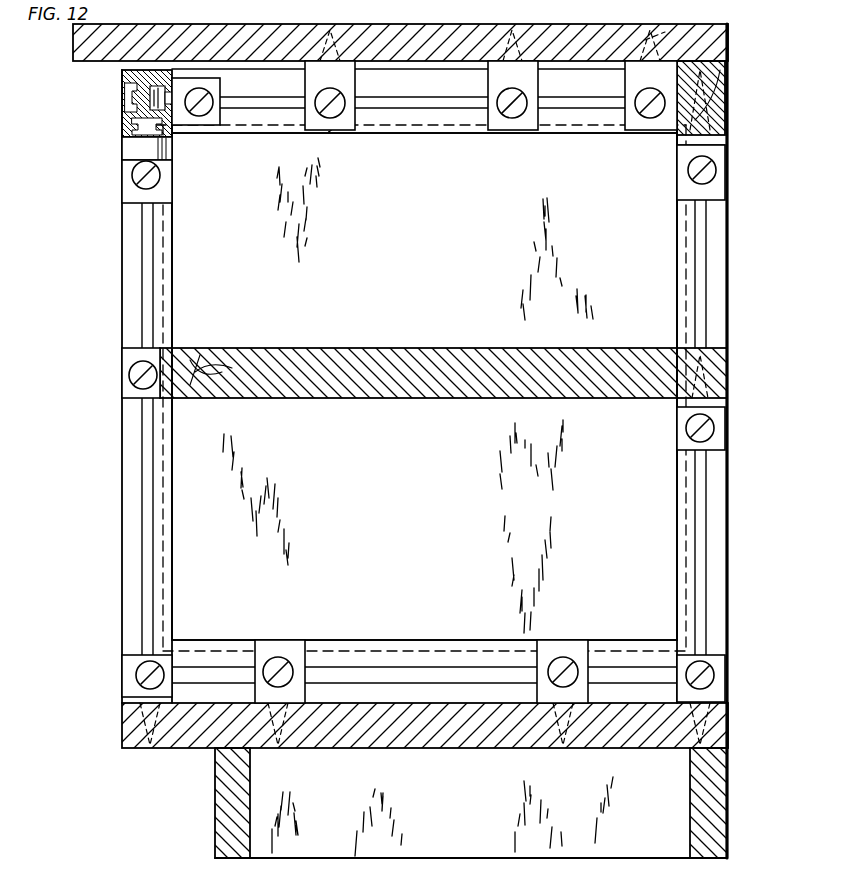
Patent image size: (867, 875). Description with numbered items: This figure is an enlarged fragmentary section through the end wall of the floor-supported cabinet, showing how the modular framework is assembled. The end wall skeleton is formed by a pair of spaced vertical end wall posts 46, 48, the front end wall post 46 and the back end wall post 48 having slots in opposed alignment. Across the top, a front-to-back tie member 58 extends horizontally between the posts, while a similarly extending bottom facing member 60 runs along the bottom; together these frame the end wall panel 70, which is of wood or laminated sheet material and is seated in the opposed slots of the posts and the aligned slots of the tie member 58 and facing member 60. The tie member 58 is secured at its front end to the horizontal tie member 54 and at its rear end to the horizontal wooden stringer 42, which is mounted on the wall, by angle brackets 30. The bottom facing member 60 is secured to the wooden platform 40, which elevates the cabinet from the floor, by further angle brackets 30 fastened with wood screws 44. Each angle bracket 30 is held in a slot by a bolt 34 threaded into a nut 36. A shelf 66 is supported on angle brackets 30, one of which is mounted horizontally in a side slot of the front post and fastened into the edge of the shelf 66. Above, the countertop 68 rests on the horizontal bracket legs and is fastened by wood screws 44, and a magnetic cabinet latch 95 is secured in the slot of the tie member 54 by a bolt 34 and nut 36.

The angle bracket 30 is at (528, 90).
The bolt 34 is at (305, 130).
The nut 36 is at (178, 82).
The wooden platform 40 is at (214, 746).
The horizontal wooden stringer 42 is at (724, 98).
The wood screw 44 is at (343, 30).
The front end wall post 46 is at (121, 260).
The back end wall post 48 is at (710, 250).
The horizontal tie member 54 is at (150, 75).
The front-to-back tie member 58 is at (437, 80).
The bottom facing member 60 is at (446, 674).
The shelf 66 is at (598, 362).
The countertop 68 is at (656, 30).
The end wall panel 70 is at (424, 505).
The magnetic cabinet latch 95 is at (132, 146).